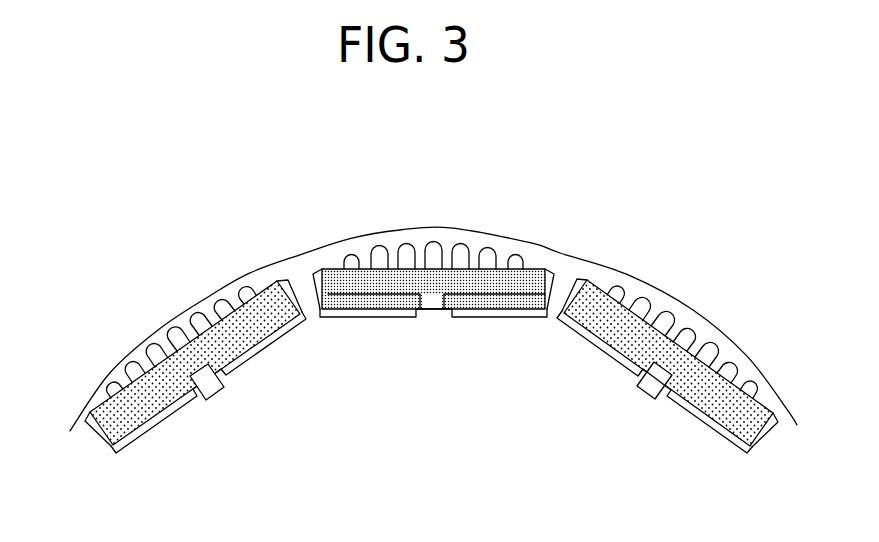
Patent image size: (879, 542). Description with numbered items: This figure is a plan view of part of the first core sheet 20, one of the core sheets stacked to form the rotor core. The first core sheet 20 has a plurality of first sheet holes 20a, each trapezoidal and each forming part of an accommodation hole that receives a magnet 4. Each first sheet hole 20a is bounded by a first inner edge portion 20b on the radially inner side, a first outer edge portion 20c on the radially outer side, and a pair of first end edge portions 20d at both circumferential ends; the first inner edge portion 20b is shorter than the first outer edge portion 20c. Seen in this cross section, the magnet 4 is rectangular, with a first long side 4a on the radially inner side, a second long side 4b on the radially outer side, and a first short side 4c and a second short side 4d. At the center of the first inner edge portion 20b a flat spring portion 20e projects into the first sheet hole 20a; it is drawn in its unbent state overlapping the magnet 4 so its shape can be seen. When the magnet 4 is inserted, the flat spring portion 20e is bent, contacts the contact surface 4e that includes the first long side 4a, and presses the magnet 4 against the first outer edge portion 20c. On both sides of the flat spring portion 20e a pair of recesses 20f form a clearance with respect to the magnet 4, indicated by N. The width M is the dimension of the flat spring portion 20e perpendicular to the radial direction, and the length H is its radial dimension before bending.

The first core sheet 20 is at (219, 284).
The first sheet hole 20a is at (325, 268).
The first inner edge portion 20b is at (639, 302).
The first outer edge portion 20c is at (703, 347).
The first end edge portion 20d is at (779, 432).
The flat spring portion 20e is at (435, 317).
The recess 20f is at (453, 318).
The magnet 4 is at (125, 383).
The first long side 4a is at (166, 428).
The second long side 4b is at (136, 337).
The first short side 4c is at (283, 279).
The second short side 4d is at (91, 437).
The contact surface 4e is at (249, 358).
The length of the flat spring portion H is at (348, 274).
The clearance N is at (380, 276).
The width of the flat spring portion M is at (417, 316).